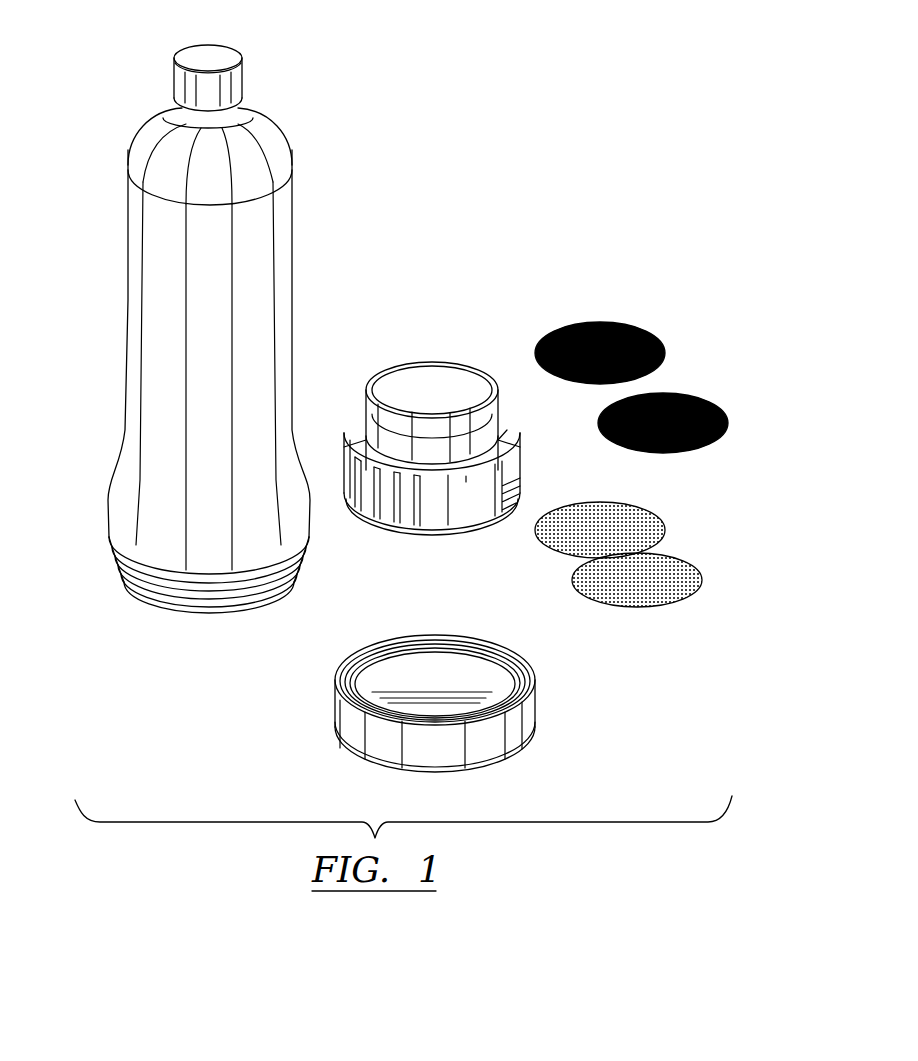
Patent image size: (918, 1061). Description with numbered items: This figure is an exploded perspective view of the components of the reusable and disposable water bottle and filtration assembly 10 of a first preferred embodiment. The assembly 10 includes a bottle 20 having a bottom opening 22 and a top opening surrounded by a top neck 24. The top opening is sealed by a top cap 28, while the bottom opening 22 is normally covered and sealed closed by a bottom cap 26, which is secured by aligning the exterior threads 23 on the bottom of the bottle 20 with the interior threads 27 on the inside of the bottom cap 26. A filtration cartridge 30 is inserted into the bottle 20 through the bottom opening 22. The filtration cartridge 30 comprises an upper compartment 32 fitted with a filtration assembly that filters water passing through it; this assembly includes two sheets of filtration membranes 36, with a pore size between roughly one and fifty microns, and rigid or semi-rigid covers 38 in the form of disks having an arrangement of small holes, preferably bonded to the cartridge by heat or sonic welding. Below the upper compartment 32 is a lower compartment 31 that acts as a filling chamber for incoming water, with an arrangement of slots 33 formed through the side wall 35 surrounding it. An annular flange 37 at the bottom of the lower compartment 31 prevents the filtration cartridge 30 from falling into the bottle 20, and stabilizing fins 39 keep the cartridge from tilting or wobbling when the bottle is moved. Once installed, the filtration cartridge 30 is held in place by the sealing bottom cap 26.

The water bottle and filtration assembly 10 is at (452, 210).
The bottle 20 is at (123, 336).
The bottom opening 22 is at (226, 606).
The exterior threads 23 is at (150, 586).
The top neck 24 is at (176, 124).
The bottom cap 26 is at (372, 778).
The interior threads 27 is at (396, 660).
The top cap 28 is at (210, 56).
The filtration cartridge 30 is at (432, 354).
The lower compartment 31 is at (474, 540).
The upper compartment 32 is at (452, 388).
The slots 33 is at (358, 512).
The side wall 35 is at (484, 496).
The filtration membranes 36 is at (665, 572).
The annular flange 37 is at (520, 482).
The covers 38 is at (702, 412).
The stabilizing fins 39 is at (507, 430).